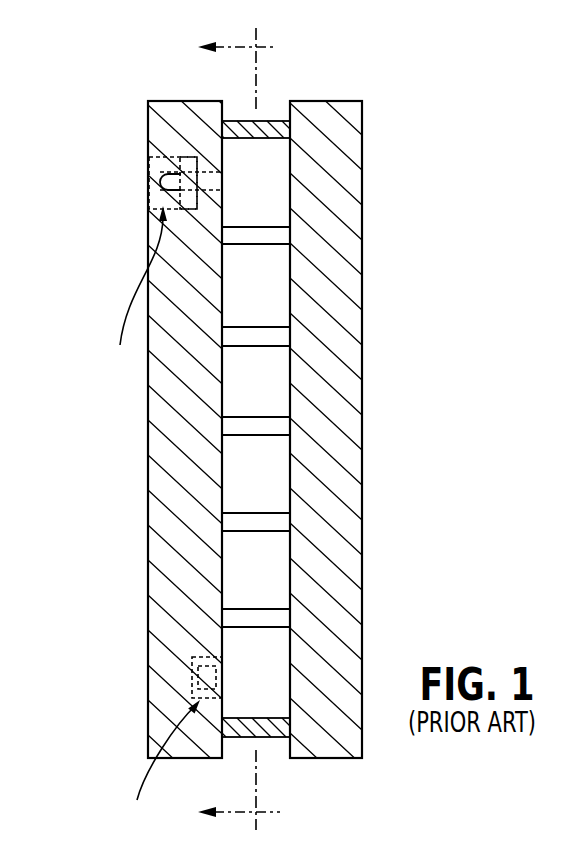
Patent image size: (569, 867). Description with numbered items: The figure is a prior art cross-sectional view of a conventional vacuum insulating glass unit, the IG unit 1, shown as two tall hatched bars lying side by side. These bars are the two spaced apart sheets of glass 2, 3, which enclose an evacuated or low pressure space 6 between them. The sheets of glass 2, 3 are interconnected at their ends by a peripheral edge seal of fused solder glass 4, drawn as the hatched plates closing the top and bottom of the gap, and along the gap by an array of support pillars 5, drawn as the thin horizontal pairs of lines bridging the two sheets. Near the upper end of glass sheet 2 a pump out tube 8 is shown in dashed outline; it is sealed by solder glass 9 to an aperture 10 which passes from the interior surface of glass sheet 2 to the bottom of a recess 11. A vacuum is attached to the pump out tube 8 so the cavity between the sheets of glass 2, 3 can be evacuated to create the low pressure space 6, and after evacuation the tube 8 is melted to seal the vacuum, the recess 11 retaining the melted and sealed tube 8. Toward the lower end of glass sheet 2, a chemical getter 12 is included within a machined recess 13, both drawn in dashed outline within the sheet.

The IG unit 1 is at (277, 429).
The sheet of glass 2 is at (148, 482).
The sheet of glass 3 is at (333, 357).
The edge seal of fused solder glass 4 is at (272, 127).
The support pillars 5 is at (262, 431).
The low pressure space 6 is at (240, 557).
The pump out tube 8 is at (158, 182).
The solder glass 9 is at (148, 166).
The aperture 10 is at (212, 177).
The recess 11 is at (138, 290).
The chemical getter 12 is at (200, 675).
The machined recess 13 is at (160, 764).